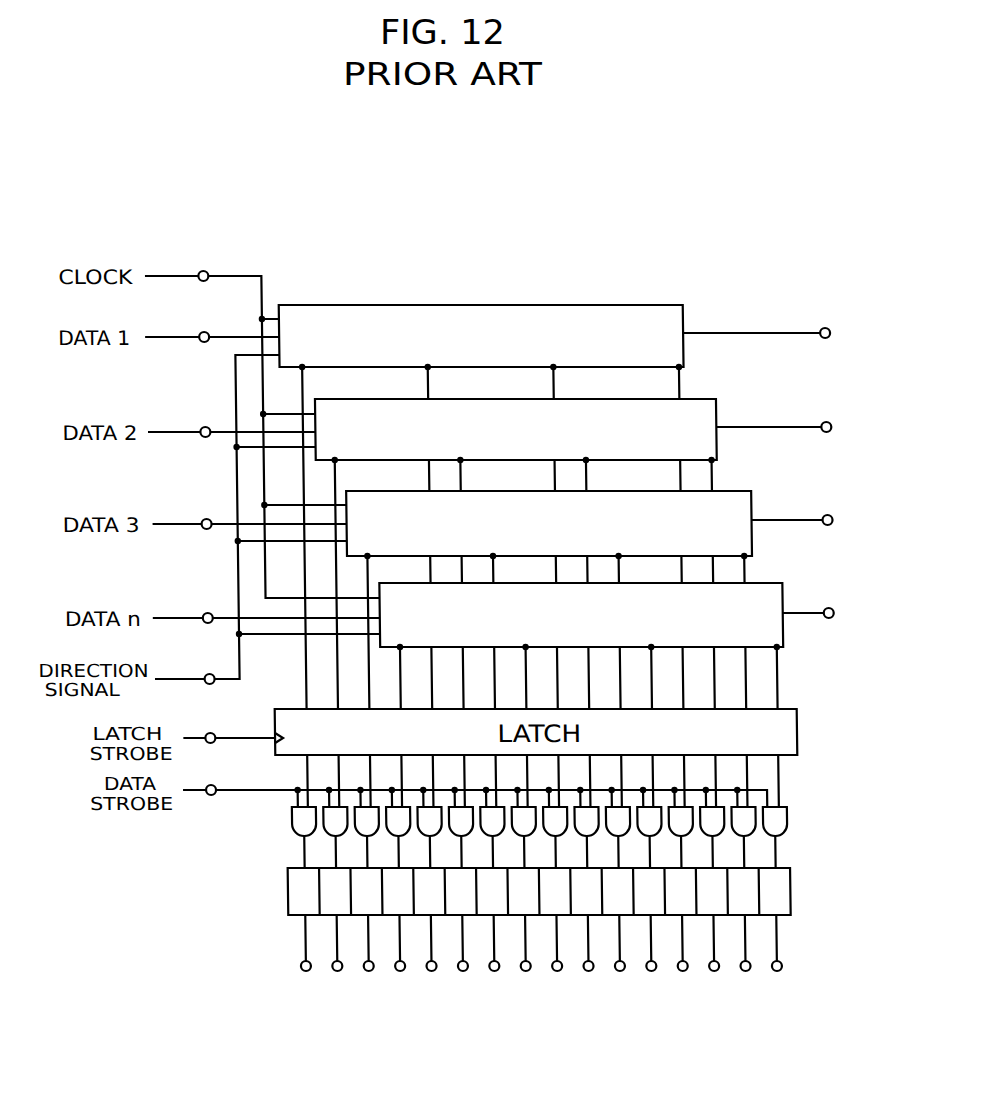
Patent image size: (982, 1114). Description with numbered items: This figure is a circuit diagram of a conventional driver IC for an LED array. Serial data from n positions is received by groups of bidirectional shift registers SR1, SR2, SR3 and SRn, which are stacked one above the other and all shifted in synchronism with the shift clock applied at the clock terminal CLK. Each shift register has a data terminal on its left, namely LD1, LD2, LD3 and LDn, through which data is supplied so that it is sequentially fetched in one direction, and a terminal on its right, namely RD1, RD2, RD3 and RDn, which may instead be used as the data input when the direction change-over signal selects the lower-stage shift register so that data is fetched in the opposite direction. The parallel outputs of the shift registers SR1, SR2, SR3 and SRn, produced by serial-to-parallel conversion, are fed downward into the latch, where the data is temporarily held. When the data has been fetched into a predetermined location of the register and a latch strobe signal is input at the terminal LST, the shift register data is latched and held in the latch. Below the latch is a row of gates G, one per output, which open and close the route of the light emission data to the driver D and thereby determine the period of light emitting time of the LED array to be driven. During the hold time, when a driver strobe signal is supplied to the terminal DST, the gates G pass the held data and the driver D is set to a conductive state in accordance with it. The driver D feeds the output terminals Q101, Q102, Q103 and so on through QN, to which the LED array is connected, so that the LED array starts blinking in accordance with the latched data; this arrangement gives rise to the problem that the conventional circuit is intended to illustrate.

The shift clock terminal CLK is at (202, 271).
The data terminal LD LD1 is at (203, 336).
The data terminal LD LD2 is at (206, 427).
The data terminal LD LD3 is at (207, 519).
The data terminal LD LDn is at (206, 613).
The latch strobe terminal LST is at (209, 733).
The driver strobe terminal DST is at (210, 796).
The bidirectional shift register SR1 is at (481, 336).
The bidirectional shift register SR2 is at (516, 429).
The bidirectional shift register SR3 is at (549, 523).
The bidirectional shift register SRn is at (581, 615).
The terminal RD RD1 is at (829, 328).
The terminal RD RD2 is at (830, 422).
The terminal RD RD3 is at (830, 515).
The terminal RD RDn is at (830, 608).
The gate G is at (290, 826).
The driver D is at (285, 893).
The output terminal Q101 is at (302, 972).
The output terminal Q102 is at (335, 972).
The output terminal Q103 is at (365, 972).
The output terminal QN is at (774, 972).